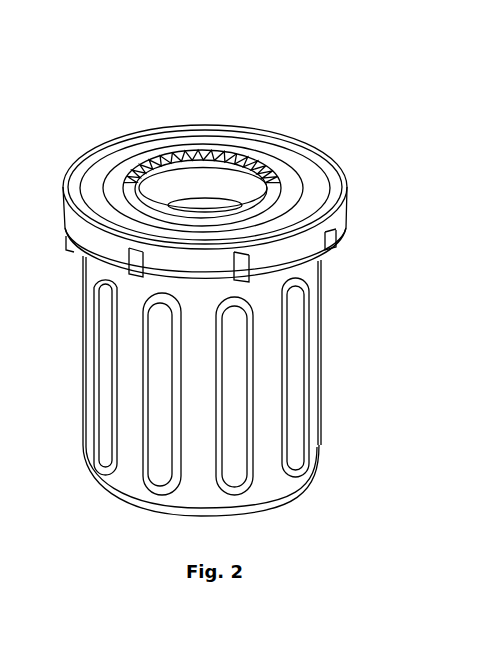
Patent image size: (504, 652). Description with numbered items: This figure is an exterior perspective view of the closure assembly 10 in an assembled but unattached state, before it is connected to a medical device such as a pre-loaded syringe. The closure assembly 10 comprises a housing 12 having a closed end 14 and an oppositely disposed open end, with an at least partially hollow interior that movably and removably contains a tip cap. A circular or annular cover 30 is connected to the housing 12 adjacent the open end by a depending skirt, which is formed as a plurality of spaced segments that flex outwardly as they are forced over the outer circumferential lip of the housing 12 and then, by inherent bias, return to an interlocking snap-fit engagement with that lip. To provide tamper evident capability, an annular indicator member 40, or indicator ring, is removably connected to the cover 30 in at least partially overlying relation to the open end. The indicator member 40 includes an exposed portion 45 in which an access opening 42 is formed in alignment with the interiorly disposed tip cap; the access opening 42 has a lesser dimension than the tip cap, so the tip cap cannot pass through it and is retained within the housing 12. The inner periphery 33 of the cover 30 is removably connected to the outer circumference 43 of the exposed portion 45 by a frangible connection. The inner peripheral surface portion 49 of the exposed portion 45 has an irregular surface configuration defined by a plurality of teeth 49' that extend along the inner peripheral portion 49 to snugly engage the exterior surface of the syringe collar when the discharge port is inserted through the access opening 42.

The closure assembly 10 is at (326, 128).
The housing 12 is at (318, 392).
The closed end 14 is at (293, 496).
The cover 30 is at (328, 168).
The inner periphery 33 is at (97, 197).
The indicator member 40 is at (302, 187).
The access opening 42 is at (204, 170).
The outer circumference 43 is at (131, 147).
The exposed portion 45 is at (180, 152).
The inner peripheral surface portion 49 is at (209, 109).
The teeth 49' is at (258, 126).